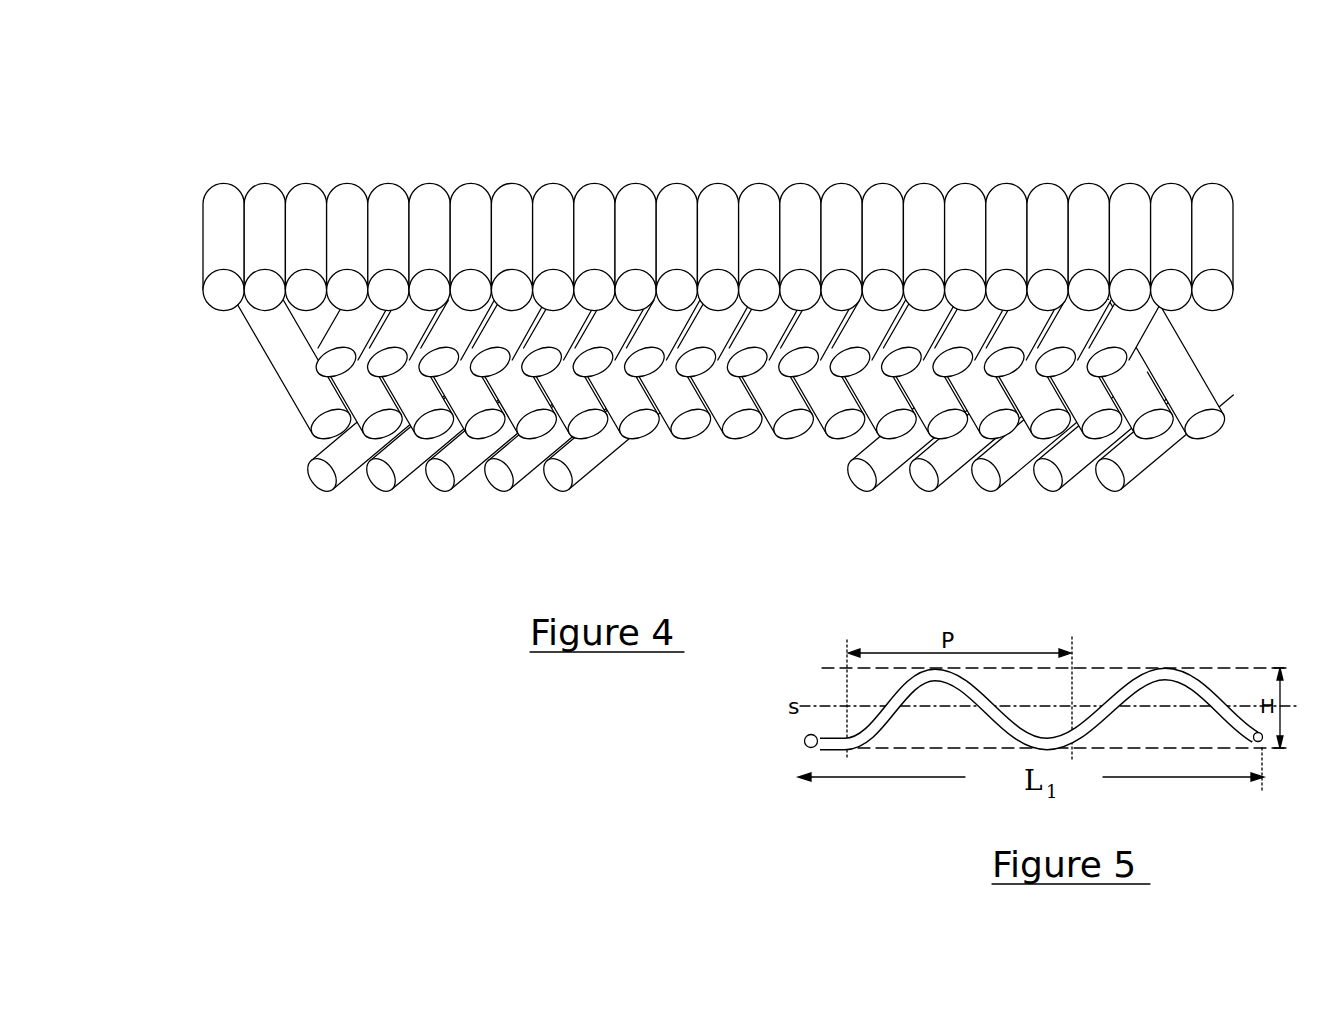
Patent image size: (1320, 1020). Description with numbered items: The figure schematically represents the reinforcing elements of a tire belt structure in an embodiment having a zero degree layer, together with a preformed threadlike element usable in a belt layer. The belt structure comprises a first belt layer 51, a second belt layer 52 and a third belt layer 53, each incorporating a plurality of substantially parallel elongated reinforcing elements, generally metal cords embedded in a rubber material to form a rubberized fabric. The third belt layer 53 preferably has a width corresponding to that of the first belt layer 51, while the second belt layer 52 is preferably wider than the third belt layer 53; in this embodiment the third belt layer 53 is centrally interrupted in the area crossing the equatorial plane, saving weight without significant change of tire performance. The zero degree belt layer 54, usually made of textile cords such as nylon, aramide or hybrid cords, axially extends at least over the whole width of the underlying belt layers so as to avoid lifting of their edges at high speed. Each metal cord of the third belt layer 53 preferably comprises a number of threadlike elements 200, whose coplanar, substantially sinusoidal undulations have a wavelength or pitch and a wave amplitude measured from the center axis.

In FIG. 4, the first belt layer 51 is at (765, 332).
In FIG. 4, the second belt layer 52 is at (296, 406).
In FIG. 4, the third belt layer 53 is at (585, 479).
In FIG. 4, the zero degree belt layer 54 is at (530, 208).
In FIG. 5, the threadlike element 200 is at (1152, 676).